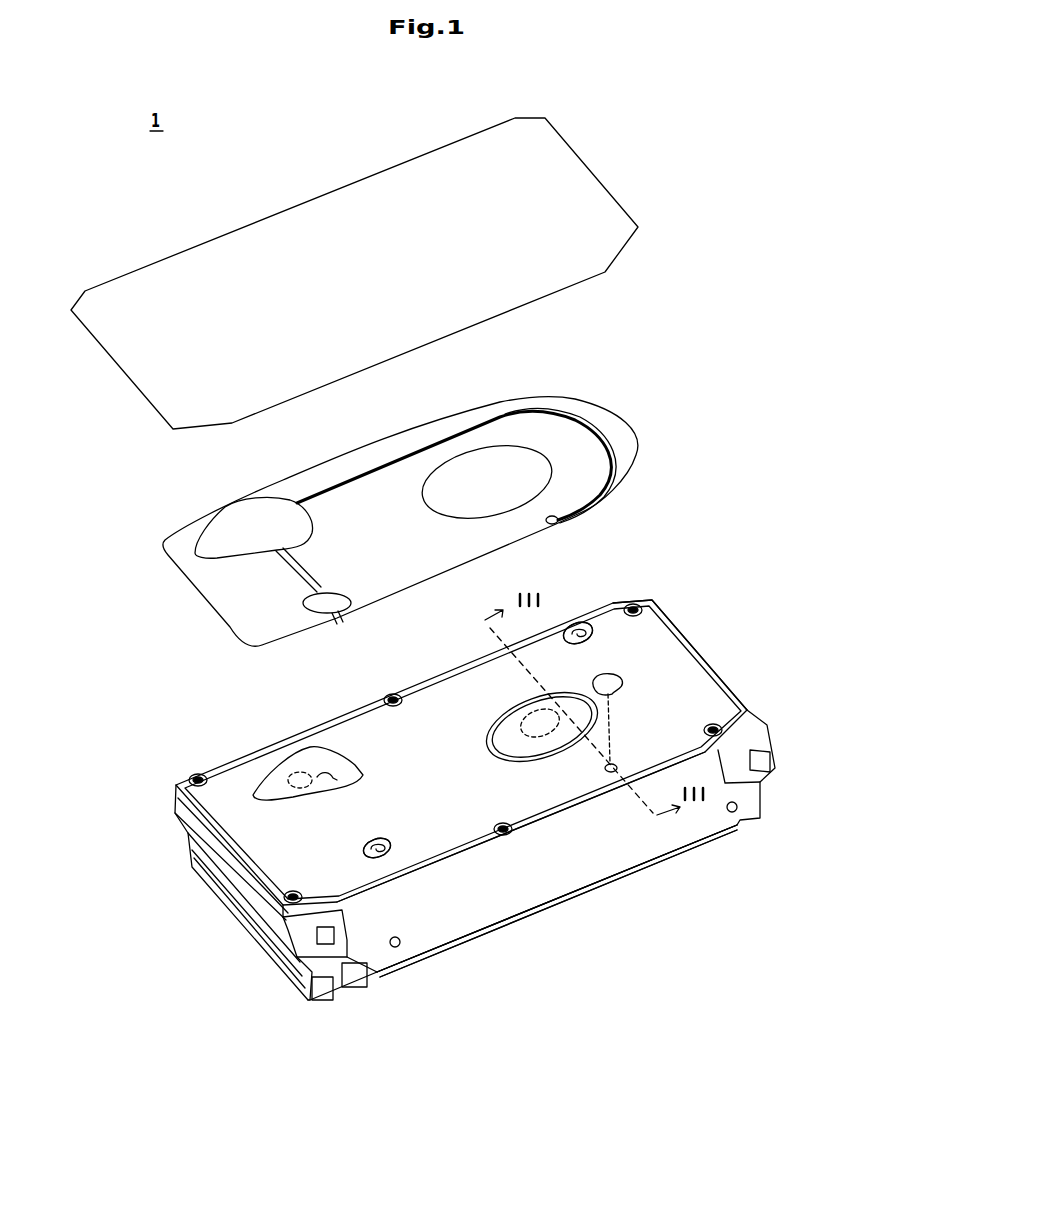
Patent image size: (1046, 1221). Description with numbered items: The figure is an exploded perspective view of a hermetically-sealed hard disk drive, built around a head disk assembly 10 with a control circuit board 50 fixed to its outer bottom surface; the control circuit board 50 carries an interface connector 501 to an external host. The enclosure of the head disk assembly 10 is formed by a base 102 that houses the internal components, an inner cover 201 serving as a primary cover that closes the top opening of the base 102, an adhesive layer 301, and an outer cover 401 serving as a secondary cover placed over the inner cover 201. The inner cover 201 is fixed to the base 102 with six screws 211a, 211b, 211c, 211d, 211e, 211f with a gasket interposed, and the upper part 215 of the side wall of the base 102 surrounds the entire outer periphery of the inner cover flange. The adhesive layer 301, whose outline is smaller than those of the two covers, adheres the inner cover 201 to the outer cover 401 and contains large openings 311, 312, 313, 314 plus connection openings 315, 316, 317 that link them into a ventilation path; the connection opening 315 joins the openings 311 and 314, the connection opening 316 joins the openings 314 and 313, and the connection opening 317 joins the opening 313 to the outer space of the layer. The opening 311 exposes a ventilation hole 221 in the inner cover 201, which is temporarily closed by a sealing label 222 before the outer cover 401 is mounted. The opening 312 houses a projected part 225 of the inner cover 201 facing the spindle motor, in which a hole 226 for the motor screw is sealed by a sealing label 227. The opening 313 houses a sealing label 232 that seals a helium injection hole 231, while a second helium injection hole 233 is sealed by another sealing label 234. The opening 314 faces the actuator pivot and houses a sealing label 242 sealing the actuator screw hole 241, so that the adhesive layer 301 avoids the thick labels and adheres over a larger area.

The head disk assembly 10 is at (740, 287).
The outer cover 401 is at (588, 162).
The adhesive layer 301 is at (628, 420).
The connection opening 315 is at (645, 440).
The opening 312 is at (508, 448).
The opening 311 is at (553, 526).
The opening 314 is at (224, 525).
The connection opening 316 is at (303, 565).
The opening 313 is at (310, 606).
The connection opening 317 is at (333, 625).
The inner cover 201 is at (175, 813).
The upper part of the side wall 215 is at (697, 650).
The base 102 is at (627, 845).
The control circuit board 50 is at (562, 898).
The interface connector 501 is at (323, 1003).
The screw 211a is at (196, 772).
The screw 211b is at (393, 693).
The screw 211c is at (633, 604).
The screw 211d is at (713, 724).
The screw 211e is at (503, 823).
The screw 211f is at (293, 891).
The projected part 225 is at (492, 742).
The sealing label 227 is at (505, 713).
The hole 226 is at (548, 742).
The helium injection hole 233 is at (578, 644).
The sealing label 234 is at (594, 638).
The sealing label 222 is at (623, 686).
The ventilation hole 221 is at (620, 764).
The sealing label 242 is at (335, 752).
The screw hole 241 is at (340, 790).
The sealing label 232 is at (388, 838).
The helium injection hole 231 is at (363, 843).